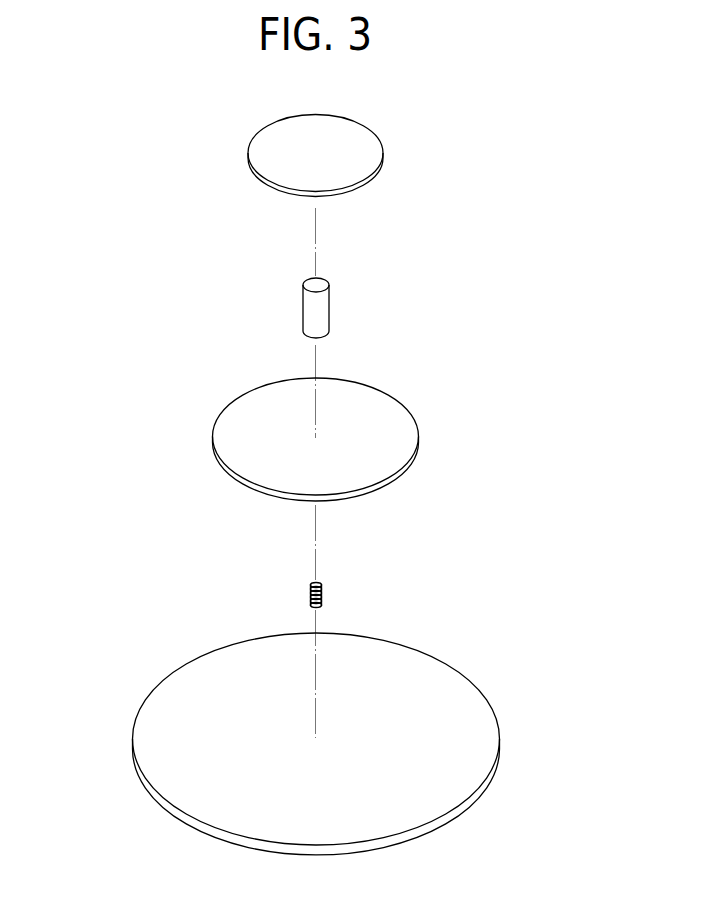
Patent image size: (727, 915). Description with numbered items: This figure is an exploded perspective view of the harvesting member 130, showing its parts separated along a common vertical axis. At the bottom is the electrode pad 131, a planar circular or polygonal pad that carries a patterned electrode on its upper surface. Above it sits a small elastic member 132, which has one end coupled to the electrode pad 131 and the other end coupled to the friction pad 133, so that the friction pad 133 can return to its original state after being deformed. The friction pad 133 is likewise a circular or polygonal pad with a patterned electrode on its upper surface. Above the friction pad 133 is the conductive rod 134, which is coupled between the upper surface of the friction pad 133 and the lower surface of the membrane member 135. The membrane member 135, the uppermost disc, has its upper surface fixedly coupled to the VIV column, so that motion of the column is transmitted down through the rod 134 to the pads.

The harvesting member 130 is at (174, 149).
The electrode pad 131 is at (472, 713).
The elastic member 132 is at (322, 589).
The friction pad 133 is at (403, 431).
The conductive rod 134 is at (323, 308).
The membrane member 135 is at (363, 154).